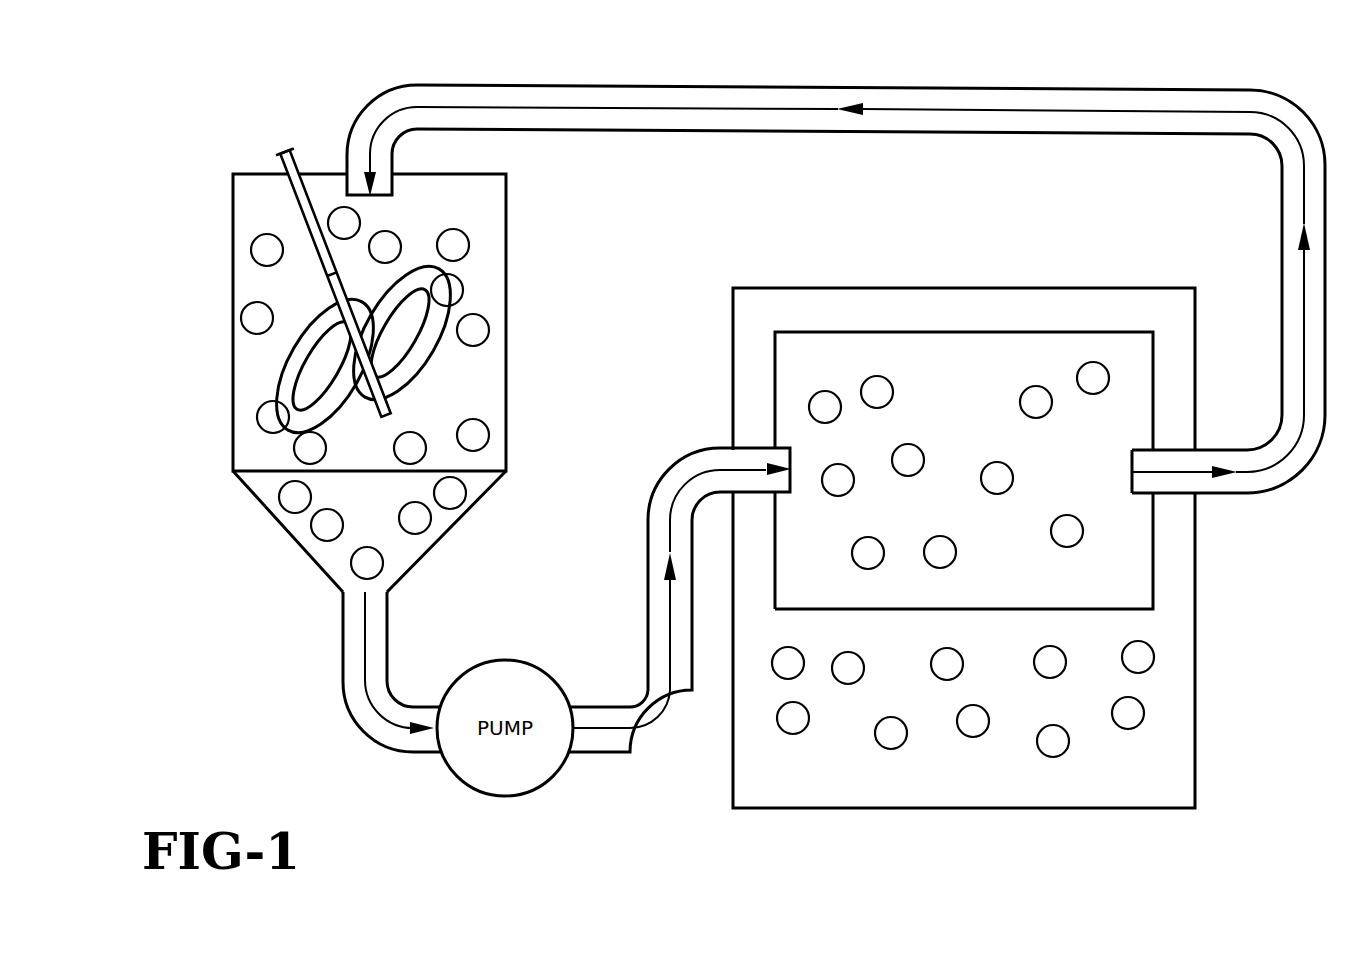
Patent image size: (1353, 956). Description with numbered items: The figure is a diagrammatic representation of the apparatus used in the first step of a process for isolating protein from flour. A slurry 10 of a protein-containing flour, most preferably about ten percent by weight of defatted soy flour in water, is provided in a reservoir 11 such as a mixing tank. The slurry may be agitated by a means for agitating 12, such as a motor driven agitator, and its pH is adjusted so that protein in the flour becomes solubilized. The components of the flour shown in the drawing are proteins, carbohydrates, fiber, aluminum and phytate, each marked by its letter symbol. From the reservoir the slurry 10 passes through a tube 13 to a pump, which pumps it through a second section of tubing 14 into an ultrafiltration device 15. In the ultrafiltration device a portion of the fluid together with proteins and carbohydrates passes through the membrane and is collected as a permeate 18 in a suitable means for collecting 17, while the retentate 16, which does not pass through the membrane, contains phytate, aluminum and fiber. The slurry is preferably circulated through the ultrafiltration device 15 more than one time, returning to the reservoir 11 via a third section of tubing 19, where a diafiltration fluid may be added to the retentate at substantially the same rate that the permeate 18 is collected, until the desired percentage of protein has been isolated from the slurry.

The slurry 10 is at (260, 213).
The reservoir 11 is at (232, 358).
The means for agitating 12 is at (292, 150).
The tube 13 is at (368, 717).
The second section of tubing 14 is at (648, 650).
The ultrafiltration device 15 is at (940, 332).
The retentate 16 is at (1132, 550).
The means for collecting 17 is at (982, 810).
The permeate 18 is at (1165, 742).
The third section of tubing 19 is at (923, 100).